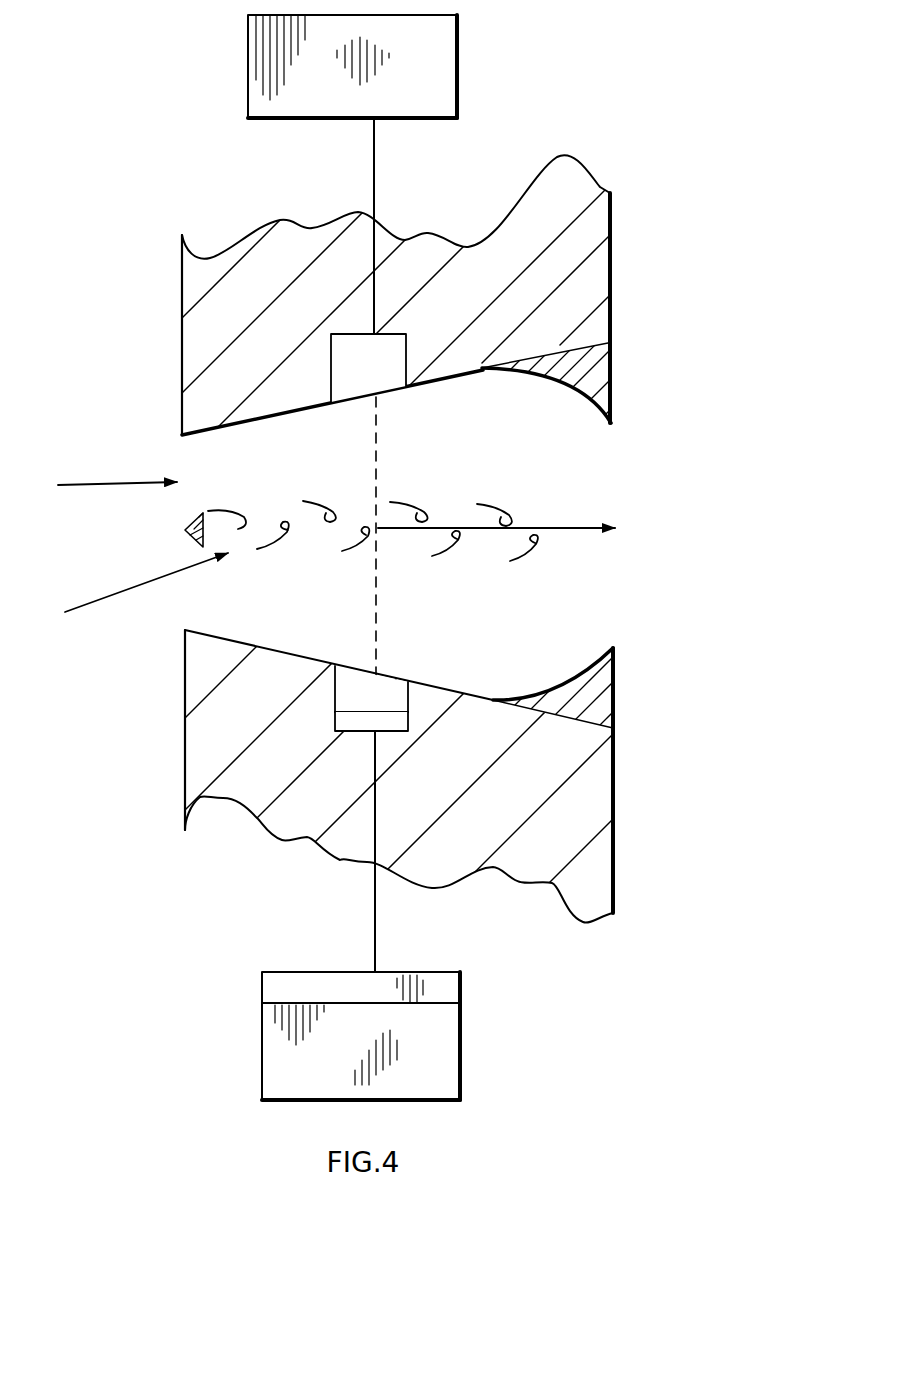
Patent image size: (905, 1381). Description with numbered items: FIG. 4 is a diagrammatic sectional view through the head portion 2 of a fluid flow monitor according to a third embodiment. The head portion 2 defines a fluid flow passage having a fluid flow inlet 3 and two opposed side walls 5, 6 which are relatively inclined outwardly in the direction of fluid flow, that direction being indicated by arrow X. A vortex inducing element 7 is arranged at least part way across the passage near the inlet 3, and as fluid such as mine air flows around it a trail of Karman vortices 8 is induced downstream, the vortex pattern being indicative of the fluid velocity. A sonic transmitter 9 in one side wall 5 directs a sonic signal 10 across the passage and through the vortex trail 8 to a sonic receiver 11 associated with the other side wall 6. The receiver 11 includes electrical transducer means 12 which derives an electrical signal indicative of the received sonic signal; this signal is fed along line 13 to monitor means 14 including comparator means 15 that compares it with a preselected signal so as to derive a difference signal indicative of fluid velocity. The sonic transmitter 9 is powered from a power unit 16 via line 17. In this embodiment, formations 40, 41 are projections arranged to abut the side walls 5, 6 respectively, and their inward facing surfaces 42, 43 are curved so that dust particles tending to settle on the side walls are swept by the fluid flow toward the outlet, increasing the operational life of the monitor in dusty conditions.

The head portion 2 is at (220, 748).
The fluid flow inlet 3 is at (109, 486).
The side wall 5 is at (272, 418).
The side wall 6 is at (262, 648).
The vortex inducing element 7 is at (185, 530).
The Karman vortices 8 is at (135, 591).
The sonic transmitter 9 is at (392, 346).
The sonic signal 10 is at (376, 443).
The sonic receiver 11 is at (355, 698).
The electrical transducer means 12 is at (395, 723).
The line 13 is at (375, 929).
The monitor means 14 is at (463, 1037).
The comparator means 15 is at (445, 992).
The power unit 16 is at (457, 62).
The line 17 is at (375, 165).
The formation 40 is at (598, 367).
The formation 41 is at (595, 689).
The inward facing surface 42 is at (563, 388).
The inward facing surface 43 is at (573, 678).
The arrow X is at (512, 530).